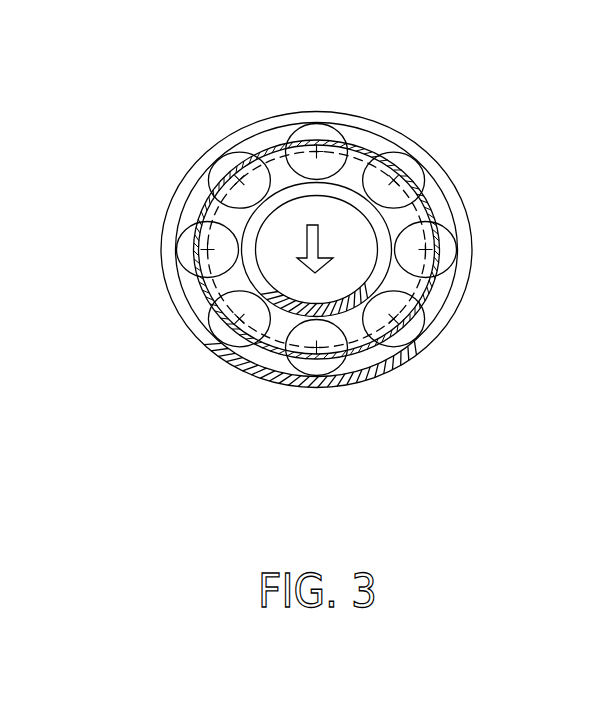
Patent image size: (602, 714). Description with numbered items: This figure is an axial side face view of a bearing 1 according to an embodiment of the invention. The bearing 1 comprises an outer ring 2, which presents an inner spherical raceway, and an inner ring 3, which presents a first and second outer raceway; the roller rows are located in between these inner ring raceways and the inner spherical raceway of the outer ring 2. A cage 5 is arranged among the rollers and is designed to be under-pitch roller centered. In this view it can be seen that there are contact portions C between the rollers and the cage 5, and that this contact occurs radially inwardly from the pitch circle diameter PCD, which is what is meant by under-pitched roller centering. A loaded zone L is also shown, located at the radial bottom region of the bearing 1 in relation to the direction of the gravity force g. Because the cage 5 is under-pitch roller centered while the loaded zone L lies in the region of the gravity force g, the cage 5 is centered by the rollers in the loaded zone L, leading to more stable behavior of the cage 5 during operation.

The bearing 1 is at (202, 120).
The outer ring 2 is at (461, 208).
The inner ring 3 is at (420, 290).
The cage 5 is at (430, 203).
The pitch circle diameter PCD is at (213, 288).
The contact portions C is at (346, 356).
The loaded zone L is at (249, 392).
The gravity force g is at (325, 244).